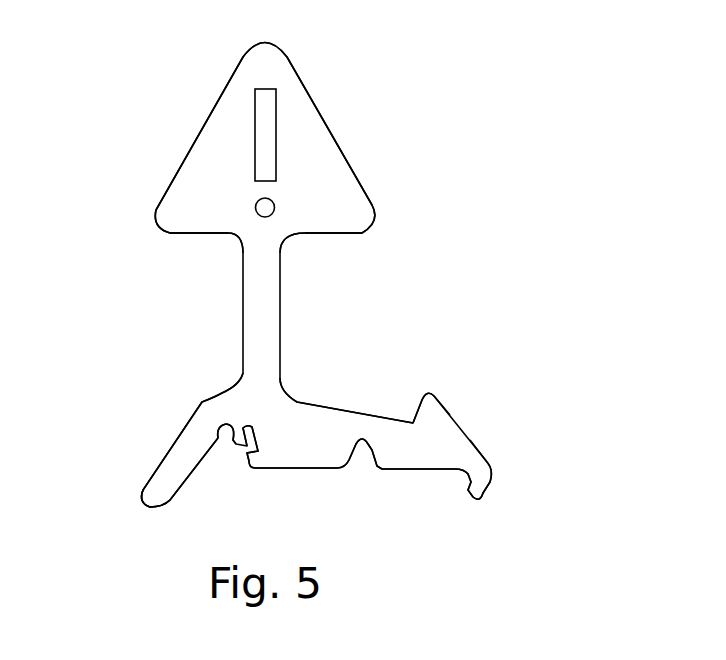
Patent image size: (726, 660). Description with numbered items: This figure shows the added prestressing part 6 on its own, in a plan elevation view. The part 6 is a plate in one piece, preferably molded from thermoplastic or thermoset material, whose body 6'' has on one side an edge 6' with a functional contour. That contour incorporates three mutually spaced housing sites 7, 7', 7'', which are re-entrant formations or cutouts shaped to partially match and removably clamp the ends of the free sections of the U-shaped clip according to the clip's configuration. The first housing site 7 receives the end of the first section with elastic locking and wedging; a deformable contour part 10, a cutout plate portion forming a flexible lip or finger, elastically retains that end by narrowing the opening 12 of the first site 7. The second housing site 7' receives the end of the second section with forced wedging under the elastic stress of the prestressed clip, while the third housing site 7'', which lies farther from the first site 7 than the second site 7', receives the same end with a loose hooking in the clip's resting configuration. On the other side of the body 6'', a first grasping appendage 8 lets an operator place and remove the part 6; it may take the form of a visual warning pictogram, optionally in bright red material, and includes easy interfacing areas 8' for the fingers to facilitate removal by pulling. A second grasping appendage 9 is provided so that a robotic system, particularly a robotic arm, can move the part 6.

The added prestressing part 6 is at (273, 275).
The edge with functional contour 6' is at (349, 495).
The body of the plate 6'' is at (346, 376).
The first housing site 7 is at (192, 424).
The second housing site 7' is at (363, 498).
The third housing site 7'' is at (515, 469).
The first grasping appendage 8 is at (279, 138).
The interfacing areas for fingers 8' is at (266, 284).
The second grasping appendage 9 is at (436, 393).
The deformable contour part 10 is at (224, 446).
The opening of the first housing site 12 is at (178, 513).